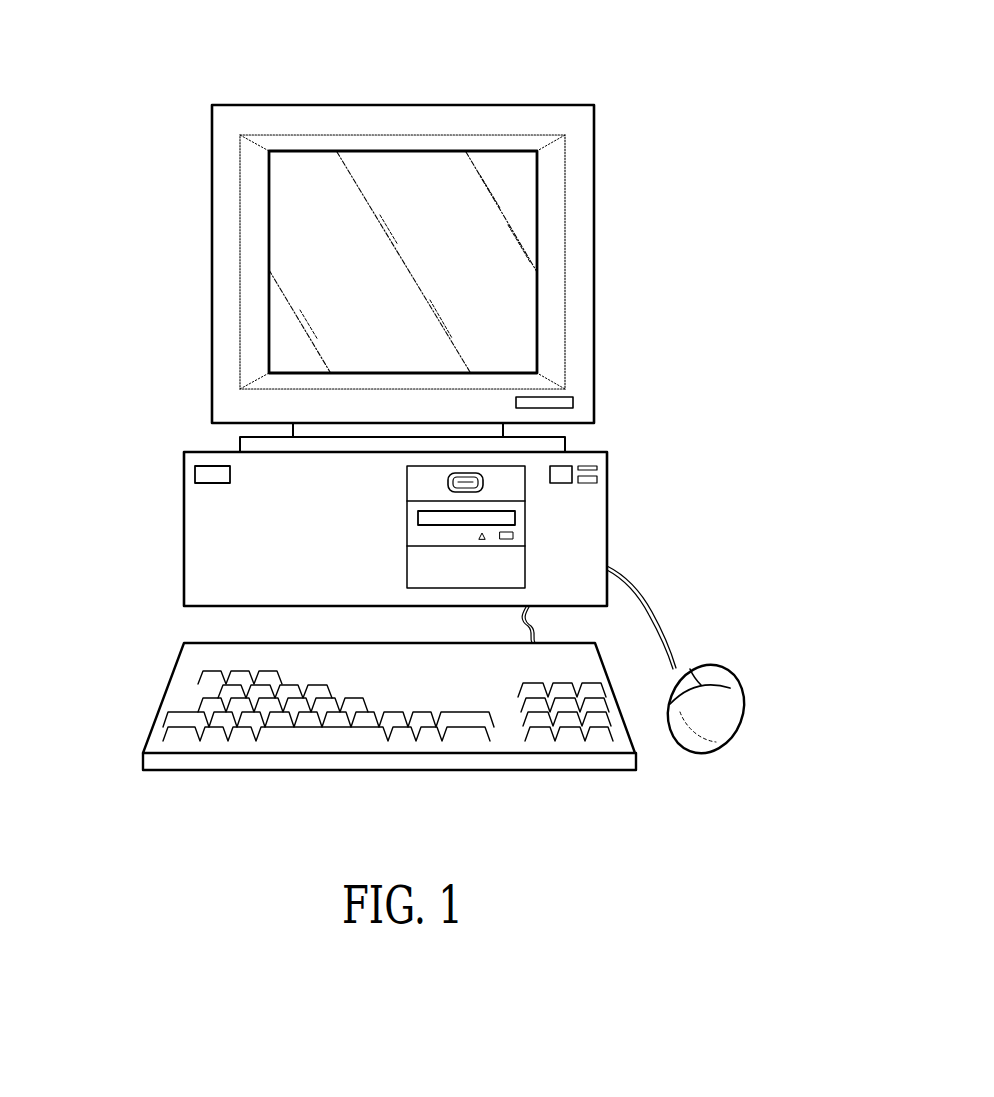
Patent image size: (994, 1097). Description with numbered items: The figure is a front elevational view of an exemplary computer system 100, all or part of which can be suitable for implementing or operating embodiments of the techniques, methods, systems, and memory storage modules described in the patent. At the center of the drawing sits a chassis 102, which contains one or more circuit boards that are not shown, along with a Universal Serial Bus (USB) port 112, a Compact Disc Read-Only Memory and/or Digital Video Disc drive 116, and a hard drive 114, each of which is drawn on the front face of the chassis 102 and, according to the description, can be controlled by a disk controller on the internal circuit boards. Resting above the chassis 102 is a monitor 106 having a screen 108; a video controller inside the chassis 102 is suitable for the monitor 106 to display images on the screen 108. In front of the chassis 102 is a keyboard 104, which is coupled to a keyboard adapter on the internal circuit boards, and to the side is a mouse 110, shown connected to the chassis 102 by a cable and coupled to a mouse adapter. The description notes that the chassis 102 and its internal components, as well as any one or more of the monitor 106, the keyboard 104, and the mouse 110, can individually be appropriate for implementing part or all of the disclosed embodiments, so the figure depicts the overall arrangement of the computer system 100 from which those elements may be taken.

The computer system 100 is at (583, 82).
The chassis 102 is at (184, 532).
The keyboard 104 is at (167, 693).
The monitor 106 is at (290, 105).
The screen 108 is at (318, 268).
The mouse 110 is at (725, 698).
The Universal Serial Bus (USB) port 112 is at (485, 480).
The hard drive 114 is at (515, 565).
The Compact Disc Read-Only Memory (CD-ROM) and/or Digital Video Disc (DVD) drive 116 is at (515, 523).